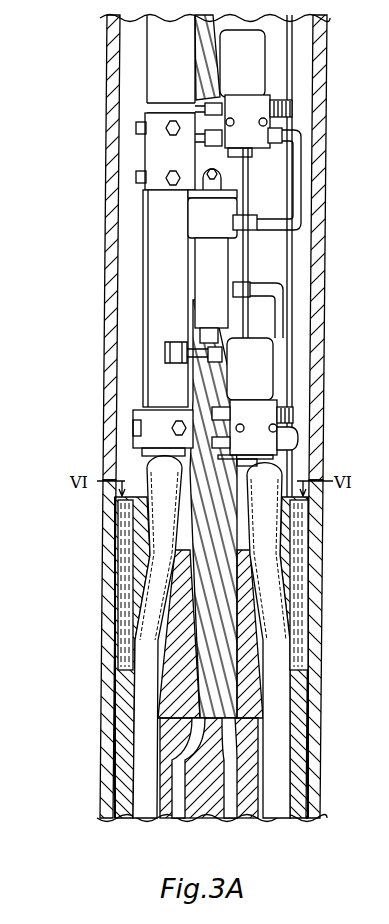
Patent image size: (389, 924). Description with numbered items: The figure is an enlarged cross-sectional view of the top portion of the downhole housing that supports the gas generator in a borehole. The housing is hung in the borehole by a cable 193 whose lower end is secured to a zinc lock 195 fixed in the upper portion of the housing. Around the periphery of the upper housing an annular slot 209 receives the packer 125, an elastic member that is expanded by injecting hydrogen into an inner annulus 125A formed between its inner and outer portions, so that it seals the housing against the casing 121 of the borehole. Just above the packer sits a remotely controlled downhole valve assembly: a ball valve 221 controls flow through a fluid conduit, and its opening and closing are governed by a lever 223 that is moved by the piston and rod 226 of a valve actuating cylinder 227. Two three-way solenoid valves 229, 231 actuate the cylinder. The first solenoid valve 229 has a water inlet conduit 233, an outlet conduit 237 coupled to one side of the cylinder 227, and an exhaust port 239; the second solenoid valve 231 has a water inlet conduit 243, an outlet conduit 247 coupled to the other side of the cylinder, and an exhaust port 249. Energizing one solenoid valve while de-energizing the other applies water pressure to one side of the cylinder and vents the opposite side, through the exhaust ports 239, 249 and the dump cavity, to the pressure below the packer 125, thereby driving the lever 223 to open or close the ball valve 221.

The casing 121 is at (320, 705).
The packer 125 is at (105, 555).
The inner annulus 125A is at (307, 555).
The cable 193 is at (215, 580).
The zinc lock 195 is at (200, 797).
The annular slot 209 is at (312, 612).
The ball valve 221 is at (170, 390).
The lever 223 is at (200, 355).
The rod 226 is at (212, 312).
The valve actuating cylinder 227 is at (245, 262).
The three-way solenoid valve 229 is at (250, 98).
The three-way solenoid valve 231 is at (293, 415).
The water inlet conduit 233 is at (200, 135).
The outlet conduit 237 is at (301, 160).
The exhaust port 239 is at (200, 103).
The water inlet conduit 243 is at (296, 443).
The outlet conduit 247 is at (283, 340).
The exhaust port 249 is at (280, 400).